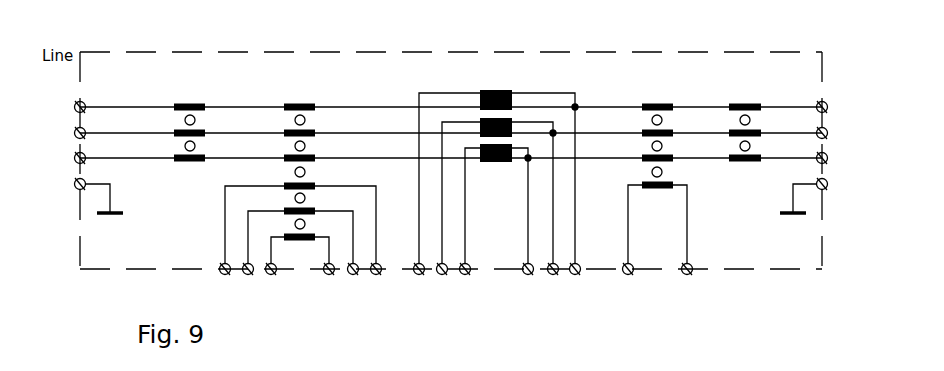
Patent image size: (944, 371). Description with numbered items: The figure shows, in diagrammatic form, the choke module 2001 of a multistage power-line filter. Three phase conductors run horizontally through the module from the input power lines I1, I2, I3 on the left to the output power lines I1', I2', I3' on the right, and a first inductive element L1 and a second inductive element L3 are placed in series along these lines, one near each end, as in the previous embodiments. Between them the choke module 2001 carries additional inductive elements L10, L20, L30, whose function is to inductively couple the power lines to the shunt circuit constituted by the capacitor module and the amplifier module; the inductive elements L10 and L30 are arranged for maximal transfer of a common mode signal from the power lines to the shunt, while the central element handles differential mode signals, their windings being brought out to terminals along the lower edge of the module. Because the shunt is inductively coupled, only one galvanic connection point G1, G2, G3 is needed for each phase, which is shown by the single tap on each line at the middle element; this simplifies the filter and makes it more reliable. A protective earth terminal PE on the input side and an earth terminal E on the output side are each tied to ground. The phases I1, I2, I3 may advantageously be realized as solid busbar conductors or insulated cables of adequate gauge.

The choke module 2001 is at (613, 63).
The first inductive element L1 is at (200, 132).
The additional inductive element L10 is at (312, 167).
The additional inductive element L20 is at (512, 120).
The additional inductive element L30 is at (668, 132).
The second inductive element L3 is at (755, 132).
The galvanic connection point G1 is at (531, 168).
The galvanic connection point G2 is at (555, 142).
The galvanic connection point G3 is at (578, 116).
The power line I1 is at (61, 107).
The power line I2 is at (61, 133).
The power line I3 is at (61, 158).
The protective earth terminal PE is at (72, 184).
The power line I1' is at (848, 107).
The power line I2' is at (848, 133).
The power line I3' is at (848, 158).
The earth terminal E is at (830, 186).